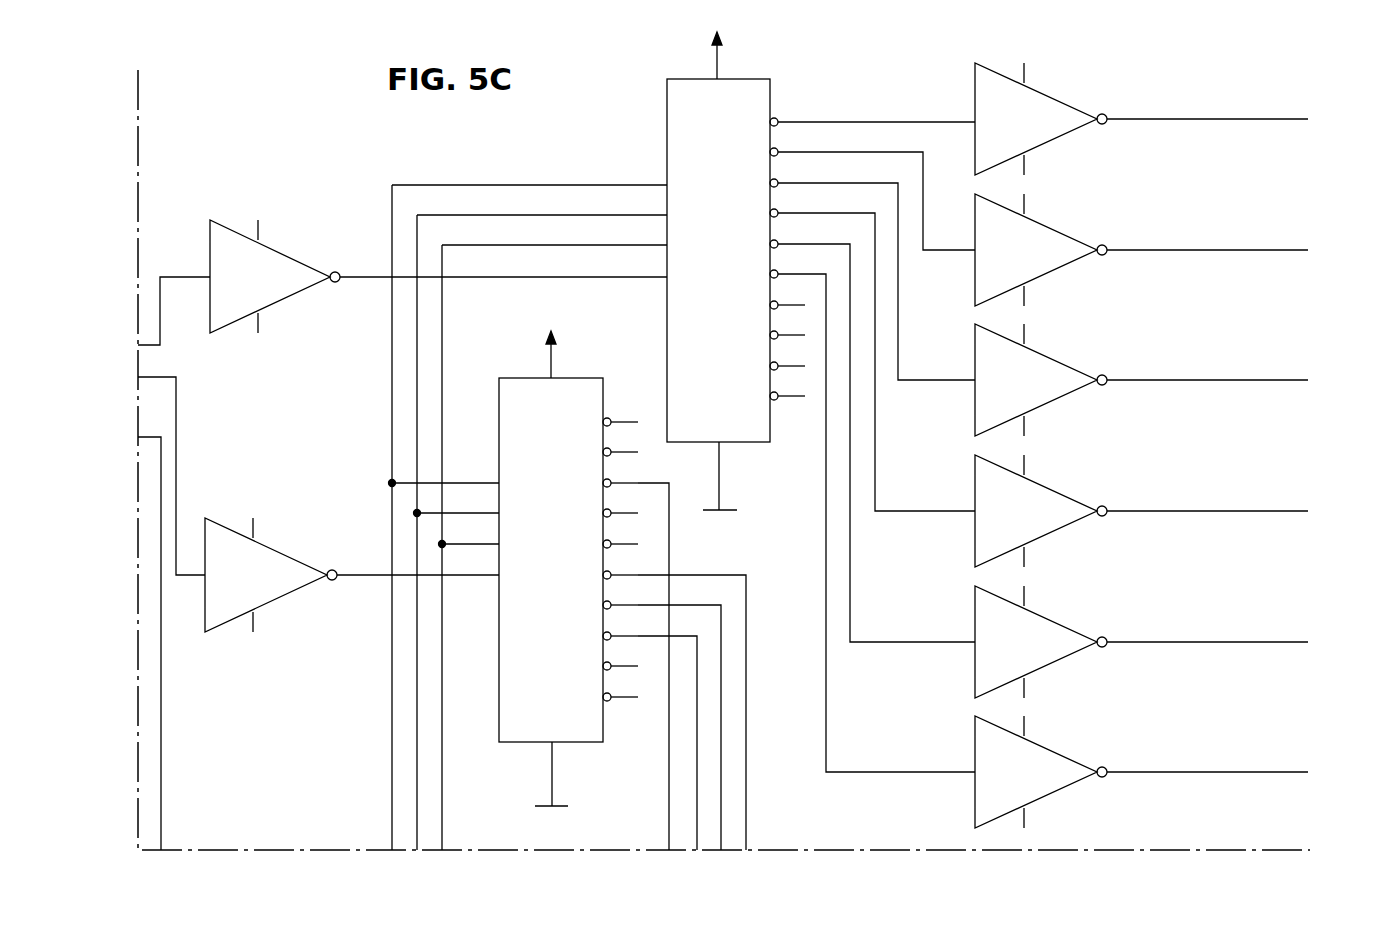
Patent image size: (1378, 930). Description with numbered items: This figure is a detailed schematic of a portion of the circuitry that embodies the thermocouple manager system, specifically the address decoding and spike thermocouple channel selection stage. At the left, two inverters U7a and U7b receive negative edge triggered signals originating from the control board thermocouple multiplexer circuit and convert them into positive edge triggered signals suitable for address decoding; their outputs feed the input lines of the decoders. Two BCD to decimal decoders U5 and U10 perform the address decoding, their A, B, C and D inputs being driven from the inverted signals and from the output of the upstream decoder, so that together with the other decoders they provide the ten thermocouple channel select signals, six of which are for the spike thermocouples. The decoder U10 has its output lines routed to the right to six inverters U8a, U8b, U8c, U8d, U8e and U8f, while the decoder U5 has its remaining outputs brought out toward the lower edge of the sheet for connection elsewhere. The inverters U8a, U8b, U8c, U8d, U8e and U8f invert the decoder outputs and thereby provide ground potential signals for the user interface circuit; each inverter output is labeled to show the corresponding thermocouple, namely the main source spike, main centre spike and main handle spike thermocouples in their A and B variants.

The U7 inverter U7a is at (429, 283).
The U7 inverter U7b is at (342, 581).
The BCD to decimal decoder U5 is at (555, 571).
The BCD to decimal decoder U10 is at (722, 272).
The inverter U8a is at (1165, 124).
The inverter U8b is at (1165, 255).
The inverter U8c is at (1165, 385).
The inverter U8d is at (1165, 516).
The inverter U8e is at (1159, 647).
The inverter U8f is at (1159, 777).